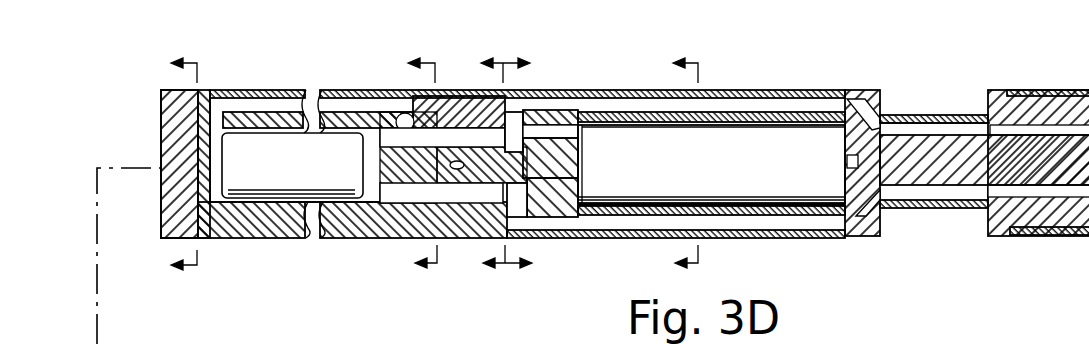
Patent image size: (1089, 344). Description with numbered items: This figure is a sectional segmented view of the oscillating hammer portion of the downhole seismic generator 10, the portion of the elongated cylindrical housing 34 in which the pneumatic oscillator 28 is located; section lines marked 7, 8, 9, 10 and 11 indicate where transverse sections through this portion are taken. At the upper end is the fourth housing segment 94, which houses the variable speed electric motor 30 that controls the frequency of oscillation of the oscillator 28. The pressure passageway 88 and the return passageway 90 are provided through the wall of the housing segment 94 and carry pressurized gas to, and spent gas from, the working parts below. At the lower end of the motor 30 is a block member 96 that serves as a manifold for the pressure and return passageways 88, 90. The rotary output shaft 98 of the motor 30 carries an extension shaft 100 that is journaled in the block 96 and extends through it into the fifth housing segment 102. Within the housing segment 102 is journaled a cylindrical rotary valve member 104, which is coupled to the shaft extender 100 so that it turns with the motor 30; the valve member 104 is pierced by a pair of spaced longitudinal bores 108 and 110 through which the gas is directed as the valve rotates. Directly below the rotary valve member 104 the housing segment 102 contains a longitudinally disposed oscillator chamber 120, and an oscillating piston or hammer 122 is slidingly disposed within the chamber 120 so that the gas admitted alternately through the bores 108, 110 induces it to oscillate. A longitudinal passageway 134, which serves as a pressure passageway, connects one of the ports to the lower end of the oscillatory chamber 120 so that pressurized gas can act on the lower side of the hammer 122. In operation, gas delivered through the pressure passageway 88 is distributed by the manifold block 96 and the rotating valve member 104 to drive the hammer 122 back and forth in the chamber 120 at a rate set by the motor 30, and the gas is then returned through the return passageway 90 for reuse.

The section line 7- 7 is at (675, 164).
The section line 8- 8 is at (532, 165).
The section line 9- 9 is at (496, 165).
The downhole seismic generator 10 is at (405, 164).
The section line 11- 11 is at (168, 165).
The pneumatic oscillator 28 is at (335, 256).
The variable speed electric motor 30 is at (730, 177).
The elongated cylindrical housing 34 is at (774, 93).
The pressure passageway 88 is at (718, 93).
The return passageway 90 is at (768, 235).
The fourth housing segment 94 is at (605, 236).
The block member 96 is at (563, 236).
The rotary output shaft 98 is at (572, 150).
The extension shaft 100 is at (558, 150).
The fifth housing segment 102 is at (258, 240).
The rotary valve member 104 is at (457, 92).
The longitudinal bore 108 is at (462, 92).
The longitudinal bore 110 is at (445, 238).
The oscillator chamber 120 is at (218, 137).
The oscillating piston or hammer 122 is at (216, 240).
The longitudinal passageway 134 is at (322, 97).